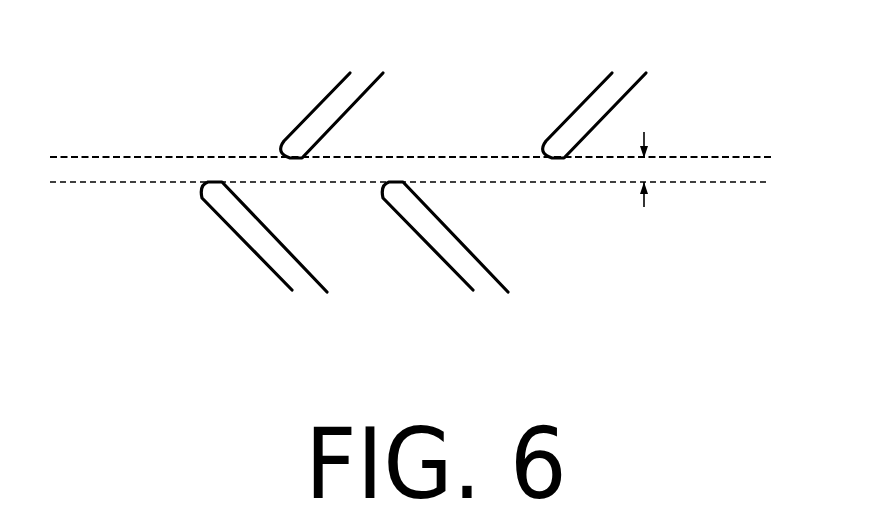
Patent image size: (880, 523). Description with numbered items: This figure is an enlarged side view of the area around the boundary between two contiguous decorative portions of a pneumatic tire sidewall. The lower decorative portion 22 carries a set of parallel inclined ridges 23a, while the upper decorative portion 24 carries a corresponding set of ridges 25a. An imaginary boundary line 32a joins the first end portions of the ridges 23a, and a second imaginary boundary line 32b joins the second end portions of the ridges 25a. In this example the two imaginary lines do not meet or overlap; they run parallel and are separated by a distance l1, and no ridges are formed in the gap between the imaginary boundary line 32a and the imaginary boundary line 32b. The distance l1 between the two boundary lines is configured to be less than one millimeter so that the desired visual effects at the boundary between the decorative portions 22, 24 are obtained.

The decorative portion 22 is at (218, 269).
The ridges 23a is at (302, 265).
The decorative portion 24 is at (292, 85).
The ridges 25a is at (568, 118).
The imaginary boundary line 32a is at (726, 185).
The imaginary boundary line 32b is at (725, 158).
The distance l1 is at (644, 167).